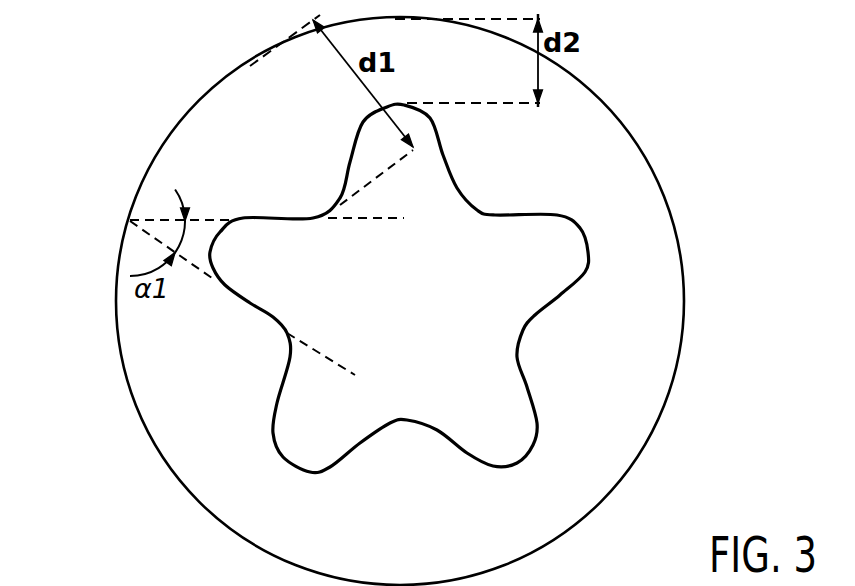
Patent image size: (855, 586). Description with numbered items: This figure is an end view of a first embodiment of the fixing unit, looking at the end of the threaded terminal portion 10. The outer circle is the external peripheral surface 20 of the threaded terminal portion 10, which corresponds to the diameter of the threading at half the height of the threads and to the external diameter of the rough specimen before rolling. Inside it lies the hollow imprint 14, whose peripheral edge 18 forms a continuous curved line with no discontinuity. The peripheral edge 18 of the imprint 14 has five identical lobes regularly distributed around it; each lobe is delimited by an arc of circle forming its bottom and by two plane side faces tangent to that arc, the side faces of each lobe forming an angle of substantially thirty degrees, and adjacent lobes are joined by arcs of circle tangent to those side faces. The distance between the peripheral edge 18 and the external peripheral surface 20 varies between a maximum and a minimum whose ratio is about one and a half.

The threaded terminal portion 10 is at (203, 507).
The hollow imprint 14 is at (407, 420).
The peripheral edge 18 is at (523, 218).
The external peripheral surface 20 is at (130, 385).